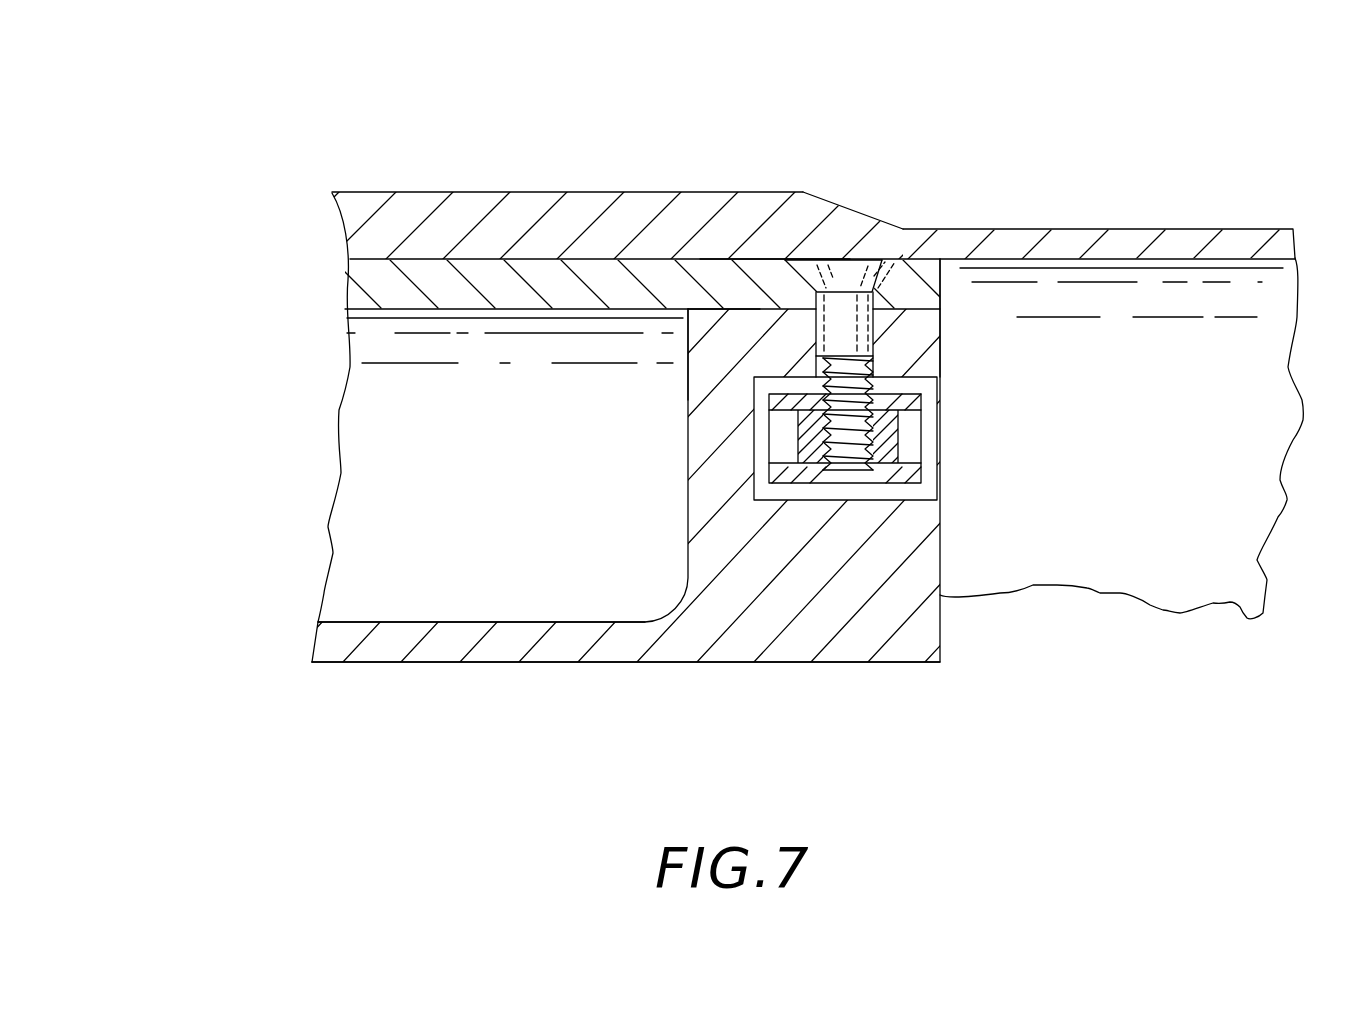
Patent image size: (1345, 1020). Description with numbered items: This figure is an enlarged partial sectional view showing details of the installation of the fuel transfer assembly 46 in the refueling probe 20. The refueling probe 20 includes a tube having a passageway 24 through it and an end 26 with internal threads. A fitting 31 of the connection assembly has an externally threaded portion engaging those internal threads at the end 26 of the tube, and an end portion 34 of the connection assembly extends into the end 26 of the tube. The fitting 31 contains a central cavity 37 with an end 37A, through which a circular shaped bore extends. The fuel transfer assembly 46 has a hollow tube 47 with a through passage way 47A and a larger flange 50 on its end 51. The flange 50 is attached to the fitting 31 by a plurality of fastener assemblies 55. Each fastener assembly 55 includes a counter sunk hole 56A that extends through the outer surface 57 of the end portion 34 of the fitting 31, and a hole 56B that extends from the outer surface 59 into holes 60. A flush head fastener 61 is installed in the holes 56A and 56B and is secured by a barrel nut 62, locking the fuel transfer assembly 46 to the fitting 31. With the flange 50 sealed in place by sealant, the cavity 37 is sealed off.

The refueling probe 20 is at (1076, 224).
The passageway 24 is at (1157, 266).
The end 26 is at (801, 192).
The fitting 31 is at (335, 283).
The end portion 34 is at (545, 256).
The central cavity 37 is at (490, 476).
The end 37A is at (718, 312).
The fuel transfer assembly 46 is at (250, 436).
The hollow tube 47 is at (524, 621).
The through passage way 47A is at (517, 664).
The flange 50 is at (940, 347).
The end 51 is at (953, 548).
The fastener assembly 55 is at (843, 258).
The counter sunk hole 56A is at (900, 281).
The hole 56B is at (830, 342).
The outer surface 57 is at (775, 258).
The outer surface 59 is at (697, 312).
The holes 60 is at (945, 473).
The flush head fastener 61 is at (868, 244).
The barrel nut 62 is at (769, 435).